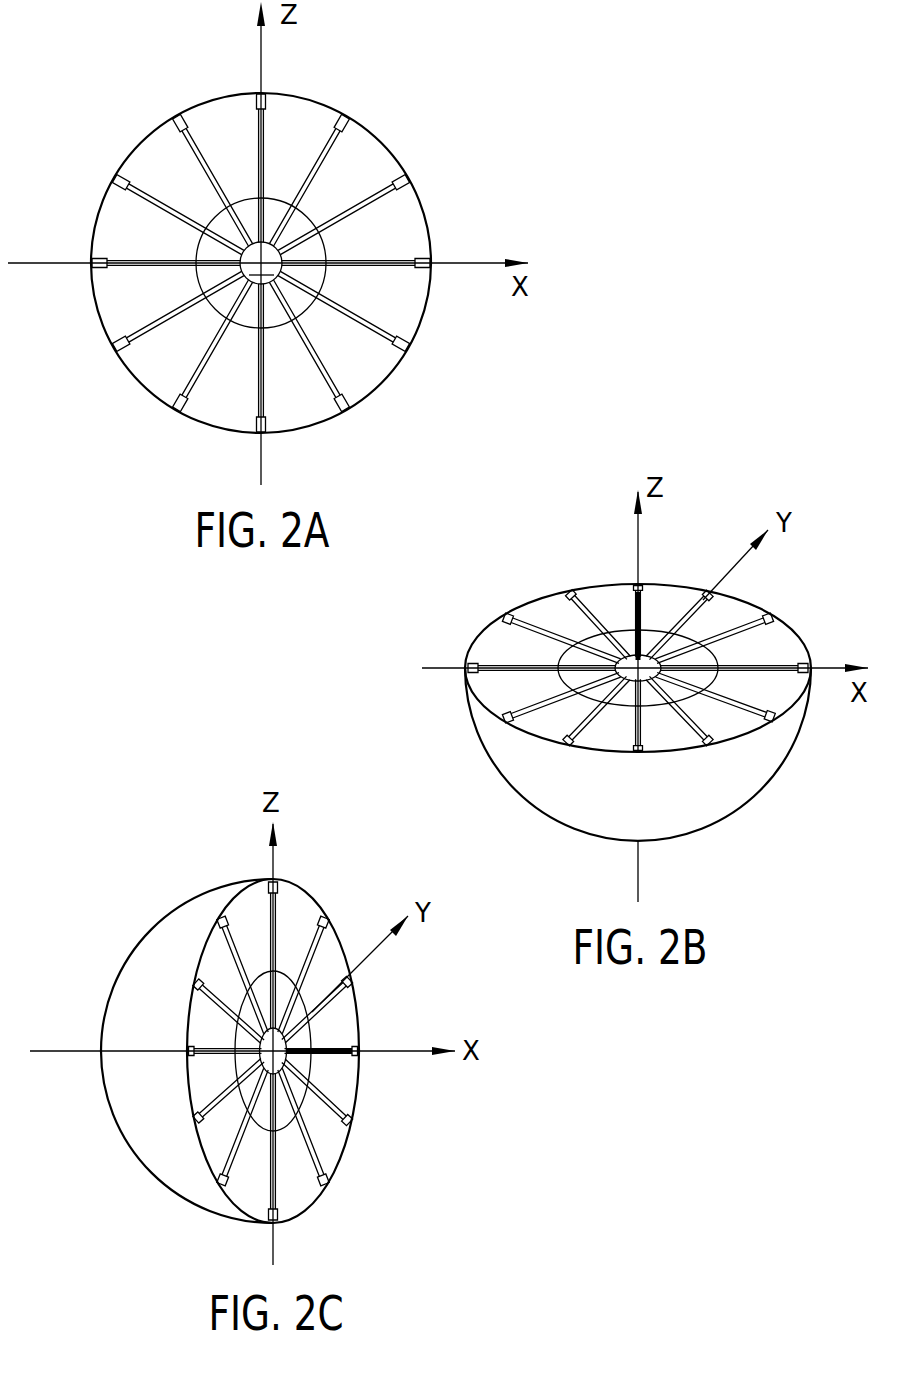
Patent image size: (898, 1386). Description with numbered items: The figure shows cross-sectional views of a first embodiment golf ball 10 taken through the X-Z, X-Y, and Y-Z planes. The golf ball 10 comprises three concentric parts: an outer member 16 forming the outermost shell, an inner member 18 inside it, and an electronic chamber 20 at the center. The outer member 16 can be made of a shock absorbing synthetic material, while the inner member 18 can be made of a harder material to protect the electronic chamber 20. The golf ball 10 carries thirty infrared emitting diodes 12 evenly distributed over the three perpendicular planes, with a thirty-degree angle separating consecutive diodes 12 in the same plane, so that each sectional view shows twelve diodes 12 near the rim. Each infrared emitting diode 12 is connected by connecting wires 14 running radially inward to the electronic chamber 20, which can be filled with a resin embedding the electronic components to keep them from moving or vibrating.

In FIG. 2A, the golf ball 10 is at (398, 137).
In FIG. 2B, the golf ball 10 is at (718, 817).
In FIG. 2C, the golf ball 10 is at (362, 1183).
In FIG. 2A, the infrared emitting diode 12 is at (178, 120).
In FIG. 2B, the infrared emitting diode 12 is at (634, 585).
In FIG. 2C, the infrared emitting diode 12 is at (270, 882).
In FIG. 2A, the connecting wires 14 is at (205, 162).
In FIG. 2B, the connecting wires 14 is at (644, 596).
In FIG. 2C, the connecting wires 14 is at (277, 915).
In FIG. 2A, the outer member 16 is at (422, 217).
In FIG. 2B, the outer member 16 is at (682, 589).
In FIG. 2C, the outer member 16 is at (208, 942).
In FIG. 2A, the inner member 18 is at (302, 222).
In FIG. 2B, the inner member 18 is at (638, 668).
In FIG. 2C, the inner member 18 is at (237, 1033).
In FIG. 2A, the electronic chamber 20 is at (261, 263).
In FIG. 2B, the electronic chamber 20 is at (634, 656).
In FIG. 2C, the electronic chamber 20 is at (262, 1033).